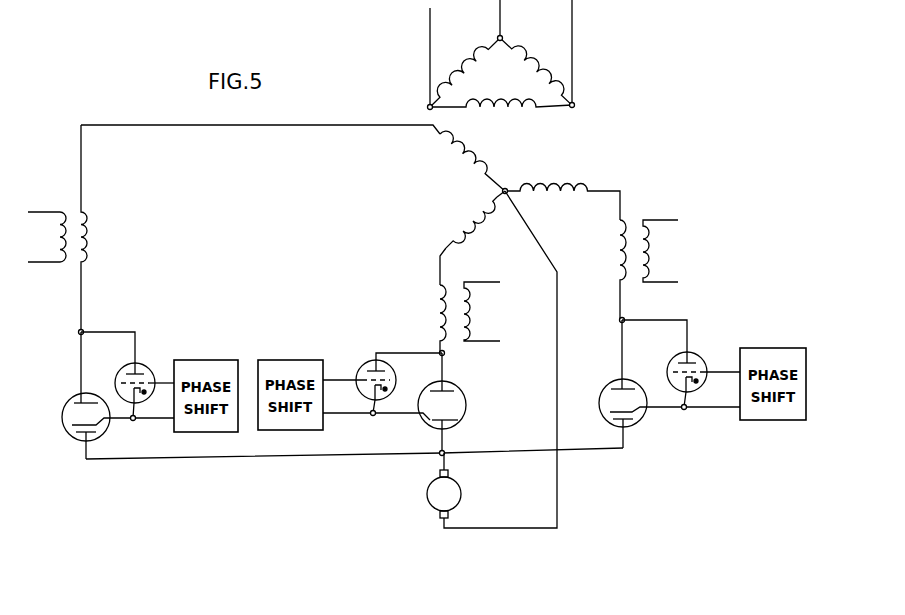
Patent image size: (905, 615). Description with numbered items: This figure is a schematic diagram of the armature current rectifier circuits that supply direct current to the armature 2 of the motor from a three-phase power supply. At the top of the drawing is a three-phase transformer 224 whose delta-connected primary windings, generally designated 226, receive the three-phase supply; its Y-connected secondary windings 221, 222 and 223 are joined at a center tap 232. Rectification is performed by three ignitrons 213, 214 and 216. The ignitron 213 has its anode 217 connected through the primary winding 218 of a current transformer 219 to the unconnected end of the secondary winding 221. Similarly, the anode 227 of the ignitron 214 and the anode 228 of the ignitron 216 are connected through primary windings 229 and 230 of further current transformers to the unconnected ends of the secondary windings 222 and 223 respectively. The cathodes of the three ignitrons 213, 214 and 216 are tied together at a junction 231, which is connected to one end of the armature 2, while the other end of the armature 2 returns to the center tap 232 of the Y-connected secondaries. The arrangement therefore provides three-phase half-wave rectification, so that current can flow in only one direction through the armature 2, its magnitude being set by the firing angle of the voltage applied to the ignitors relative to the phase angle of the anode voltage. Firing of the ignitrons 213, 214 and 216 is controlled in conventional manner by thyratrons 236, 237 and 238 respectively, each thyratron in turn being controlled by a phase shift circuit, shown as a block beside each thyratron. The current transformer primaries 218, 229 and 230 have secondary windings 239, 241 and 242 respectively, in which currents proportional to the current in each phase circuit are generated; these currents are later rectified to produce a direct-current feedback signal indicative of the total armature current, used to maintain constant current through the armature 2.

The armature 2 is at (462, 487).
The ignitron 213 is at (102, 395).
The ignitron 214 is at (416, 403).
The ignitron 216 is at (649, 384).
The anode 217 is at (79, 402).
The primary winding 218 is at (88, 233).
The current transformer 219 is at (78, 228).
The secondary winding 221 is at (472, 150).
The secondary winding 222 is at (468, 221).
The secondary winding 223 is at (560, 188).
The three-phase transformer 224 is at (554, 203).
The delta-connected primary windings 226 is at (519, 91).
The anode 227 is at (450, 392).
The anode 228 is at (614, 388).
The primary winding 229 is at (431, 306).
The primary winding 230 is at (614, 254).
The junction 231 is at (447, 451).
The center tap 232 is at (505, 195).
The thyratron 236 is at (150, 369).
The thyratron 237 is at (362, 366).
The thyratron 238 is at (673, 367).
The secondary winding 239 is at (56, 212).
The secondary winding 241 is at (471, 310).
The secondary winding 242 is at (652, 255).